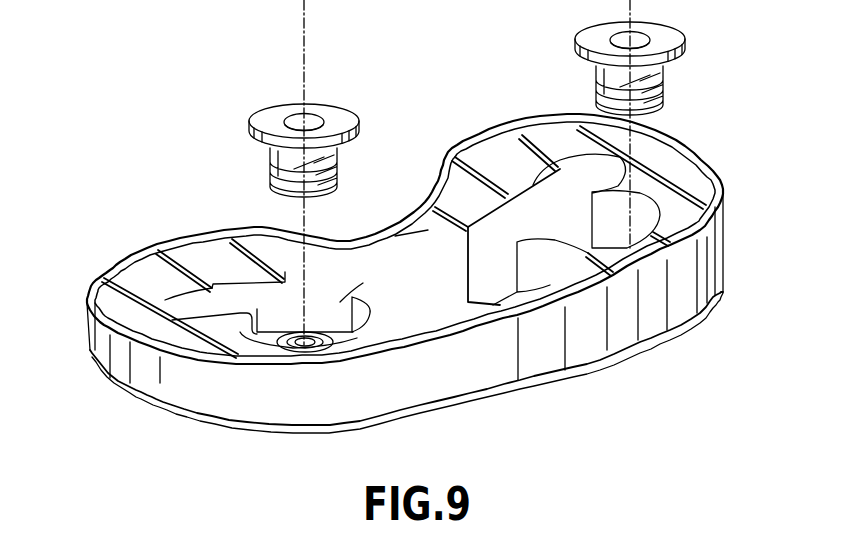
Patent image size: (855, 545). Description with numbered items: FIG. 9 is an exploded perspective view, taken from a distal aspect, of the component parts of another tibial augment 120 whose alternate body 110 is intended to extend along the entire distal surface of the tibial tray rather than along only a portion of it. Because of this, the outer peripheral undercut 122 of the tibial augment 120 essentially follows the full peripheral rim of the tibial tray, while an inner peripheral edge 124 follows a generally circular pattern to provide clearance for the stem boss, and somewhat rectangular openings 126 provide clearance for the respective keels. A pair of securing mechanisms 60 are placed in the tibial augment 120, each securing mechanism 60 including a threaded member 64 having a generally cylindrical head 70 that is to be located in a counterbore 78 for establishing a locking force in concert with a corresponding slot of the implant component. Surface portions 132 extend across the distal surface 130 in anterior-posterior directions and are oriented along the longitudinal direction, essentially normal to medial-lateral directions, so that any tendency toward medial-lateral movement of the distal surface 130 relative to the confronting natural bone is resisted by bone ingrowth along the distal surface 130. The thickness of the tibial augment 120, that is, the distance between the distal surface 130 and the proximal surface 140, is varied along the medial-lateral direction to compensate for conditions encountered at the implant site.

The securing mechanism 60 is at (236, 124).
The threaded member 64 is at (250, 105).
The head 70 is at (337, 112).
The counterbore 78 is at (352, 268).
The body 110 is at (95, 346).
The tibial augment 120 is at (162, 414).
The outer peripheral undercut 122 is at (243, 422).
The inner peripheral edge 124 is at (430, 230).
The openings 126 is at (277, 283).
The distal surface 130 is at (447, 200).
The surface portions 132 is at (237, 253).
The proximal surface 140 is at (300, 432).